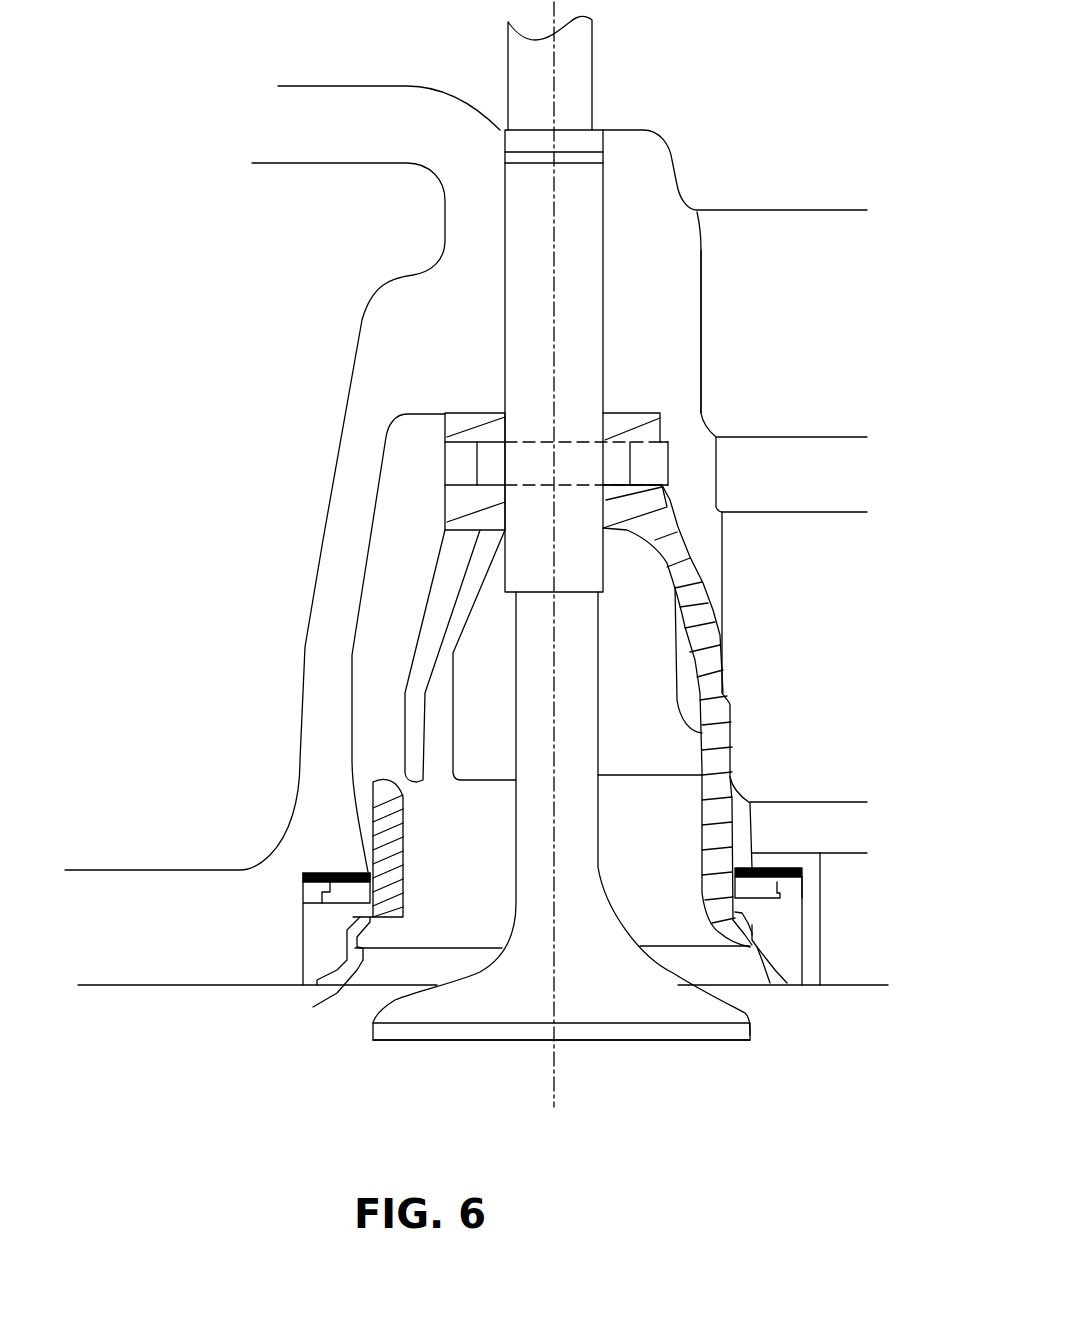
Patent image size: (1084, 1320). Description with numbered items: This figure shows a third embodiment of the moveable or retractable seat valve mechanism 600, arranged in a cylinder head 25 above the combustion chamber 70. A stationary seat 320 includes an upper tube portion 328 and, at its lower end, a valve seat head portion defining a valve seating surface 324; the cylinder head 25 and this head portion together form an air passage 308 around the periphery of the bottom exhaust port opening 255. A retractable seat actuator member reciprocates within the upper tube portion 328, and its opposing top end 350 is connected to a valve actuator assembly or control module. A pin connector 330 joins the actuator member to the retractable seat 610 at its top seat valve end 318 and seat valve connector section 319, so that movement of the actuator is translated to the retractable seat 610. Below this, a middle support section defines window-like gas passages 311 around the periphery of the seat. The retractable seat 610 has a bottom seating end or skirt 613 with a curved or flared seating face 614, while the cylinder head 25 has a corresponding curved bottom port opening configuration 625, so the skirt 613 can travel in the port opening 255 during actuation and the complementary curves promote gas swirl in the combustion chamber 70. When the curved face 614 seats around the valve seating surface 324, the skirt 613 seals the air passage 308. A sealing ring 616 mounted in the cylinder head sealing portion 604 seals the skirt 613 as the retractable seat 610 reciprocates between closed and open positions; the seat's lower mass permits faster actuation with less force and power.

The top end 350 is at (583, 65).
The cylinder head 25 is at (653, 210).
The upper tube portion 328 is at (515, 223).
The pin connector 330 is at (615, 463).
The seat valve connector section 319 is at (650, 458).
The top seat valve end 318 is at (655, 500).
The retractable seat valve mechanism 600 is at (908, 359).
The retractable seat 610 is at (705, 545).
The stationary seat 320 is at (600, 680).
The window-like gas passages 311 is at (461, 714).
The bottom seating end or skirt 613 is at (628, 834).
The sealing ring 616 is at (350, 872).
The cylinder head sealing portion 604 is at (303, 893).
The bottom port opening configuration 625 is at (303, 960).
The curved or flared seating face 614 is at (313, 1007).
The bottom exhaust port opening 255 is at (437, 967).
The air passage 308 is at (353, 1005).
The valve seating surface 324 is at (720, 1010).
The combustion chamber 70 is at (400, 1124).